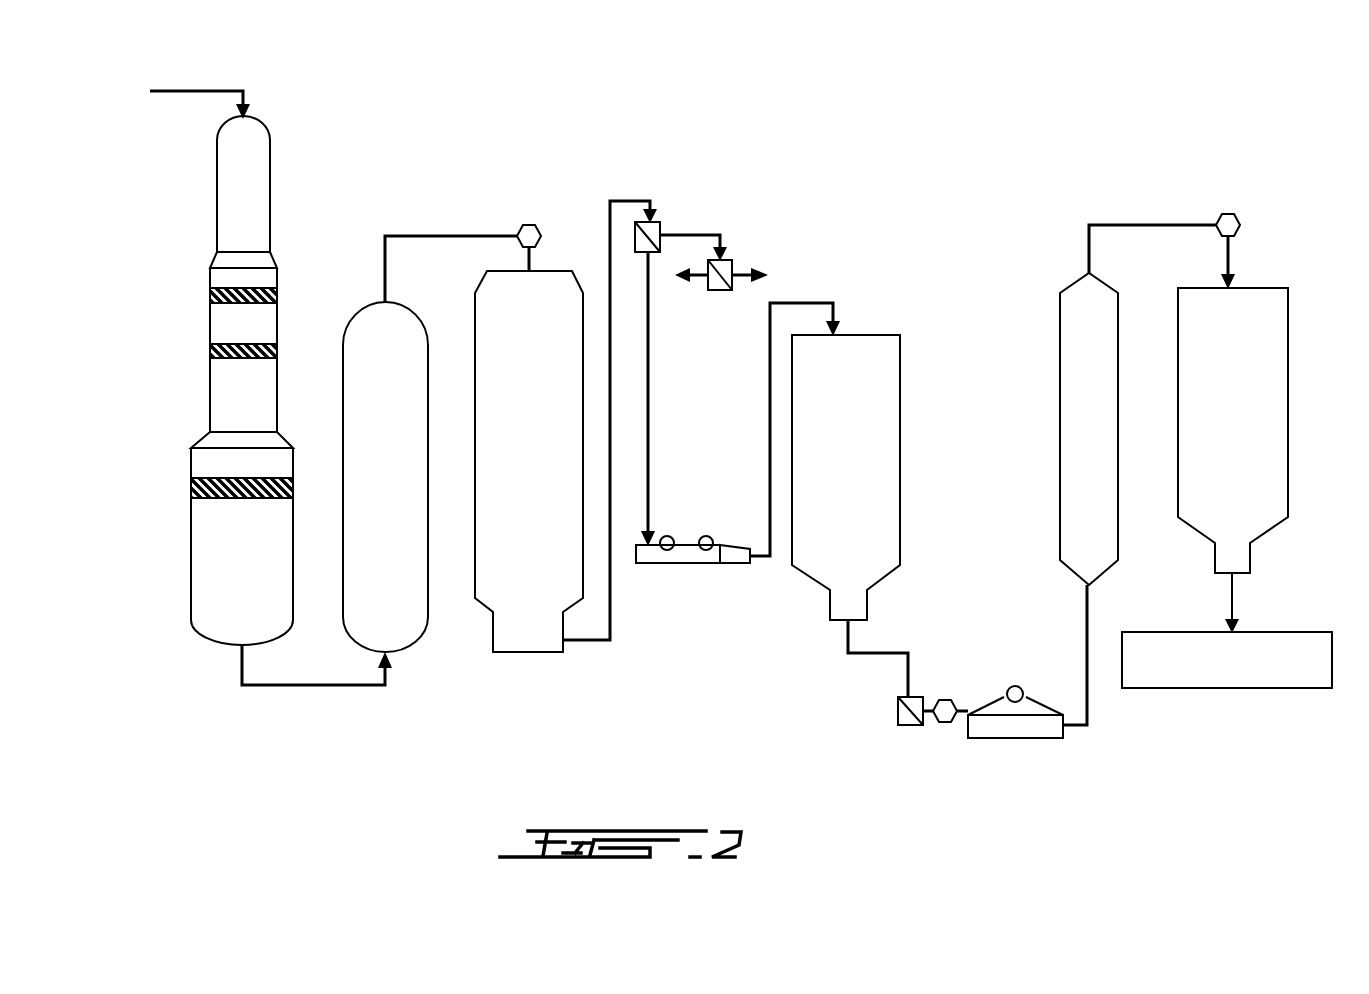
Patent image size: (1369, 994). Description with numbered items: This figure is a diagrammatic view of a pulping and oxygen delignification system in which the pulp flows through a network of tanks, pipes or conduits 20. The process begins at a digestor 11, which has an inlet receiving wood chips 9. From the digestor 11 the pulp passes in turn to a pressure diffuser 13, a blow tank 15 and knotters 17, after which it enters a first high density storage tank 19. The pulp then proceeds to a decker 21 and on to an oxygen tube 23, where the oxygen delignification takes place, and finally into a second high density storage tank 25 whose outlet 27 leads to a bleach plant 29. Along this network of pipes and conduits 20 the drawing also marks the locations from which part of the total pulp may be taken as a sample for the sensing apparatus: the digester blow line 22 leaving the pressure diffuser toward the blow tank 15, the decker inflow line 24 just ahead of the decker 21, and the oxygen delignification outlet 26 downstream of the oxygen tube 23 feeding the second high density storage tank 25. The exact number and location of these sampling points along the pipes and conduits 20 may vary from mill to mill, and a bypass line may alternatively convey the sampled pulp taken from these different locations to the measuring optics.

The wood chips 9 is at (226, 86).
The digestor 11 is at (191, 517).
The pressure diffuser 13 is at (410, 646).
The blow tank 15 is at (540, 655).
The knotters 17 is at (660, 228).
The first high density storage tank 19 is at (810, 580).
The pipes or conduits 20 is at (430, 236).
The decker 21 is at (1065, 735).
The digester blow line 22 is at (529, 224).
The oxygen tube 23 is at (1060, 532).
The decker inflow line 24 is at (942, 725).
The second high density storage tank 25 is at (1290, 432).
The O2 delignification outlet 26 is at (1228, 214).
The outlet 27 is at (1240, 578).
The bleach plant 29 is at (1236, 629).